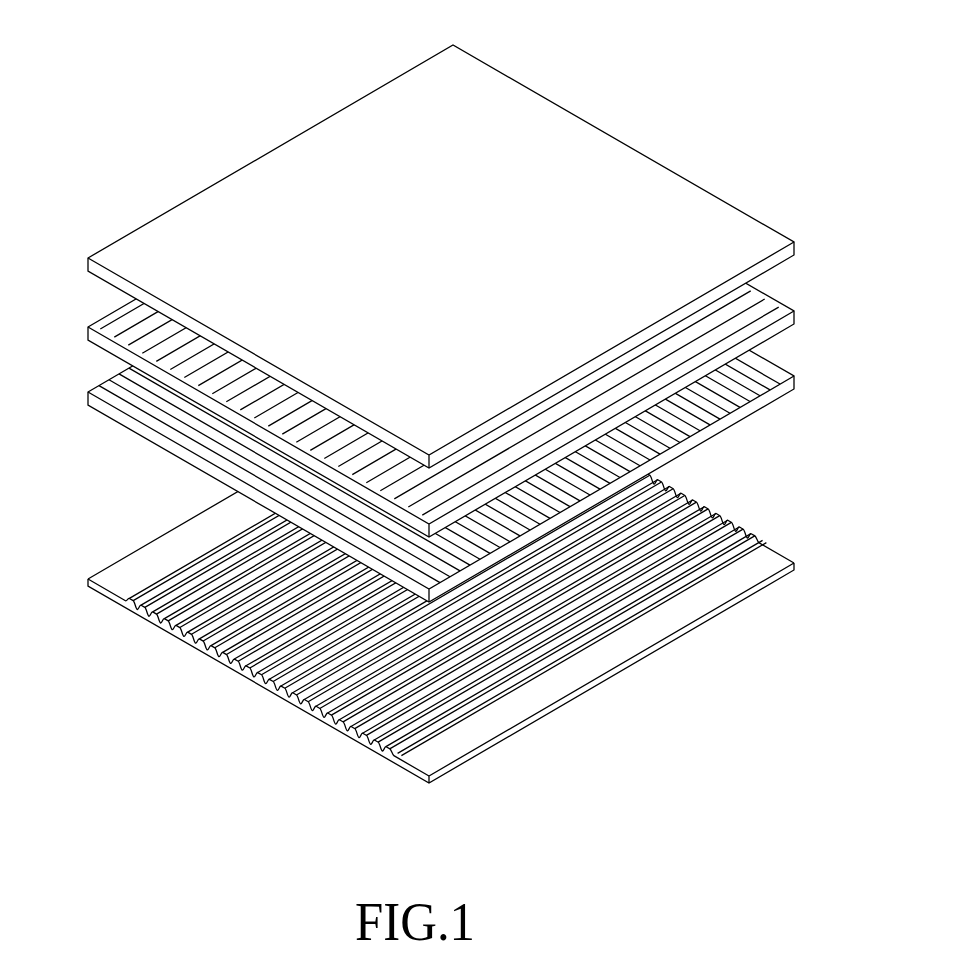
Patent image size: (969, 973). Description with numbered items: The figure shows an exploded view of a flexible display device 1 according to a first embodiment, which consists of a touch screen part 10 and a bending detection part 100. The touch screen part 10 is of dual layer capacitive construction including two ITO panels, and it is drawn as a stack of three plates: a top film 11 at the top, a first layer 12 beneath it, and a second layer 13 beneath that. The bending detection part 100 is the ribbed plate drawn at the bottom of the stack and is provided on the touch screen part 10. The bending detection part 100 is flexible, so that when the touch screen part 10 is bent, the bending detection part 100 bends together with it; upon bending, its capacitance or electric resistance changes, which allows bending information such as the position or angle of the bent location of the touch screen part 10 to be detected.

The flexible display device 1 is at (465, 414).
The touch screen part 10 is at (457, 323).
The top film 11 is at (767, 237).
The first layer 12 is at (767, 308).
The second layer 13 is at (767, 378).
The bending detection part 100 is at (784, 541).